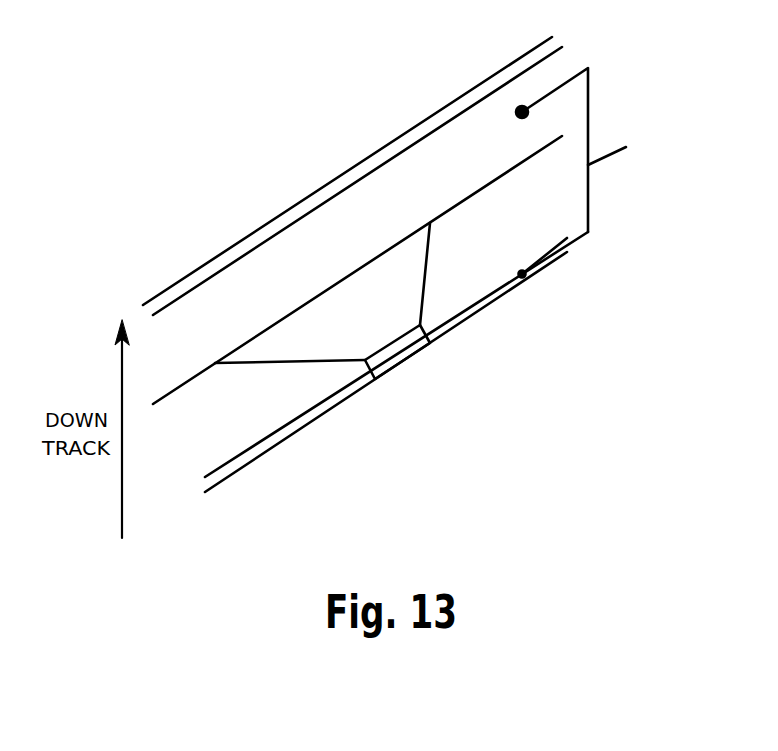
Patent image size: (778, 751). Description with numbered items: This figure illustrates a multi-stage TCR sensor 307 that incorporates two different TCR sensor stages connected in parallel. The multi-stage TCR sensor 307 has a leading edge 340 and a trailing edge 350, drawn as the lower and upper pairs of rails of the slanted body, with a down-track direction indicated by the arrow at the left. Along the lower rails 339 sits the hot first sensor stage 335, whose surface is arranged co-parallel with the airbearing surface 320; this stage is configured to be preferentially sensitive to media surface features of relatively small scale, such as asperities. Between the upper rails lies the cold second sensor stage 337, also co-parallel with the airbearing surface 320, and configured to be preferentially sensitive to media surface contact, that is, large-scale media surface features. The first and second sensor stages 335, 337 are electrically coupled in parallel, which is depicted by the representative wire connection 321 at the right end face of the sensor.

The multi-stage TCR sensor 307 is at (173, 241).
The airbearing surface 320 is at (520, 114).
The wire connection 321 is at (588, 120).
The first sensor stage 335 is at (393, 368).
The second sensor stage 337 is at (300, 238).
The rail 339 is at (263, 442).
The leading edge 340 is at (350, 428).
The trailing edge 350 is at (417, 91).